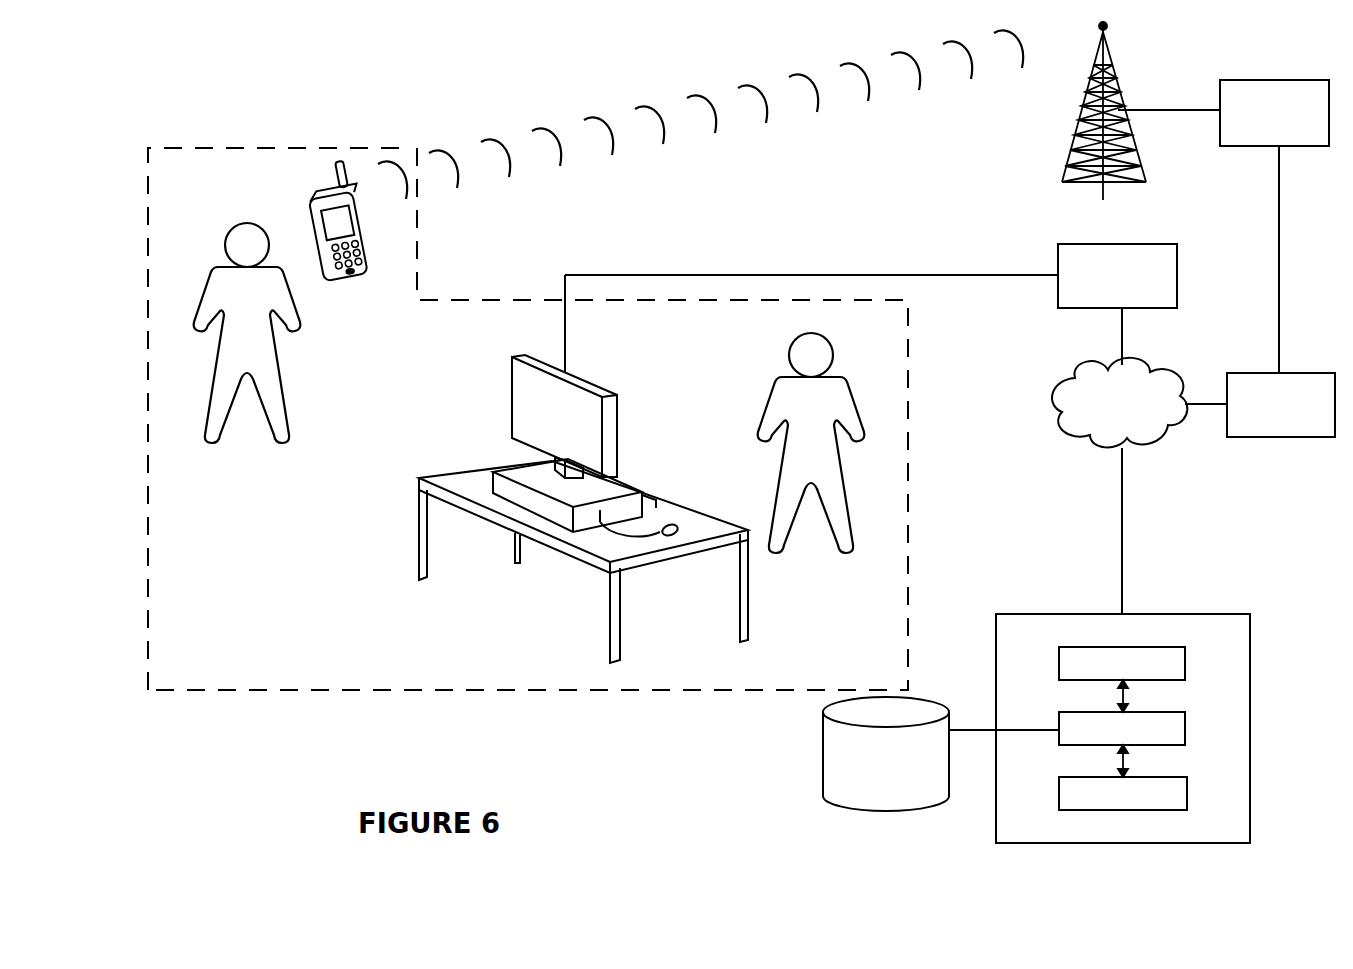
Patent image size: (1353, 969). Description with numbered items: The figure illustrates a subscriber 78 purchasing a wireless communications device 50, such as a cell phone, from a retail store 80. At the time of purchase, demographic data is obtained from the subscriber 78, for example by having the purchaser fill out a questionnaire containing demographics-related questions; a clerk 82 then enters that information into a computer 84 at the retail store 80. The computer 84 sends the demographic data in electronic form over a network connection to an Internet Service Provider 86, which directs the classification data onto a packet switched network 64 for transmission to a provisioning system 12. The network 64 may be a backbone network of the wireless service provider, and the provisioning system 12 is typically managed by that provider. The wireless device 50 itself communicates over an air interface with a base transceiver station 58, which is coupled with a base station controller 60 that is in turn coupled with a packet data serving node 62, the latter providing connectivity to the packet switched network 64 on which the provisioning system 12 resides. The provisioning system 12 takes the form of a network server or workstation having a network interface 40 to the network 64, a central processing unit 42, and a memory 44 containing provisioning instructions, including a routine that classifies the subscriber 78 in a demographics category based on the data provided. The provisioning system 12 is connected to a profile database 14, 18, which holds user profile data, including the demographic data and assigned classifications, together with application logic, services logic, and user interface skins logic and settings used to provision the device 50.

The provisioning system 12 is at (1123, 716).
The profile database 14 is at (905, 754).
The profile database 18 is at (823, 758).
The network interface 40 is at (1187, 672).
The central processing unit 42 is at (1187, 737).
The memory 44 is at (1187, 802).
The wireless communications device 50 is at (364, 255).
The base transceiver station 58 is at (1118, 108).
The base station controller 60 is at (1270, 80).
The packet data serving node 62 is at (1290, 437).
The packet switched network 64 is at (1076, 374).
The subscriber 78 is at (208, 290).
The retail store 80 is at (909, 493).
The clerk 82 is at (768, 405).
The computer 84 is at (618, 447).
The Internet Service Provider 86 is at (1177, 292).